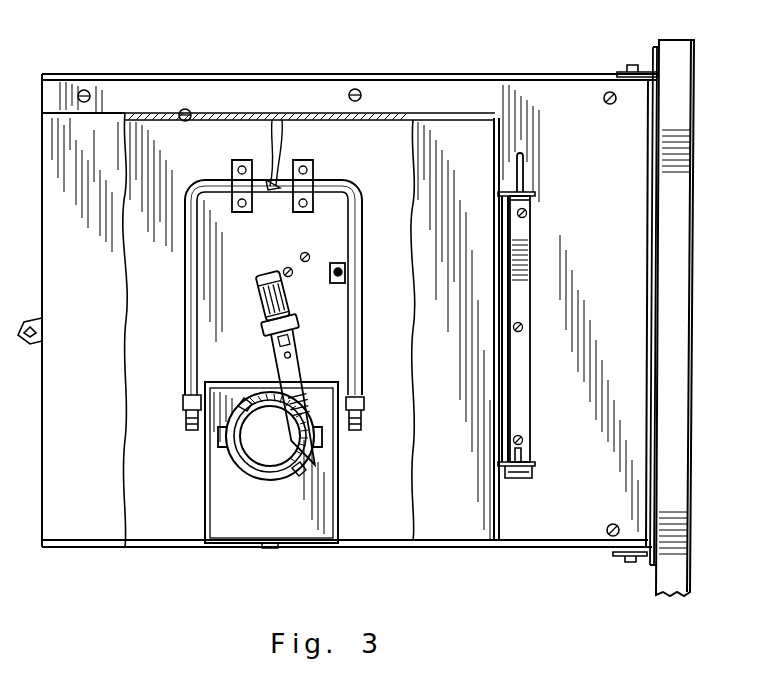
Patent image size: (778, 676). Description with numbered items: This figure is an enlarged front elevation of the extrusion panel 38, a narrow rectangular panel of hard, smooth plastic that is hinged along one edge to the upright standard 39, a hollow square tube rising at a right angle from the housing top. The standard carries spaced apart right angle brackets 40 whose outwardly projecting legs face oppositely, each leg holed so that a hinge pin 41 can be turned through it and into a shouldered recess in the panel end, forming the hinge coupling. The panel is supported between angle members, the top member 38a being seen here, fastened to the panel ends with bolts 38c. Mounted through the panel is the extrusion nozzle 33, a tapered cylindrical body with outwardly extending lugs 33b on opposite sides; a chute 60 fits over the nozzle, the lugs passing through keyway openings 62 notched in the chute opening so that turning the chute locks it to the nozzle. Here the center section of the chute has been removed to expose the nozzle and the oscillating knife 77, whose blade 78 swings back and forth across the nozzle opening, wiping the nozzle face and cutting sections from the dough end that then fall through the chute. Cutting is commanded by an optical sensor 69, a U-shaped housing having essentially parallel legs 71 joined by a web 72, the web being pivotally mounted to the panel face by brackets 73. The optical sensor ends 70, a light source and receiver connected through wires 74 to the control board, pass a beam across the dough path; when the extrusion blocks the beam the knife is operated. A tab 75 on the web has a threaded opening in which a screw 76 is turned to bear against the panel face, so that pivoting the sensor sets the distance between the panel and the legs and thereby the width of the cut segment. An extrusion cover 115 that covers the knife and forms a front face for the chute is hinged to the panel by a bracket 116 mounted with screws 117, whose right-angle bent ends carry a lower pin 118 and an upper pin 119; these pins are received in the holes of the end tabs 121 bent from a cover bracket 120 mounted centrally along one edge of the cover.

The extrusion nozzle 33 is at (256, 472).
The lugs 33b is at (218, 437).
The extrusion panel 38 is at (632, 333).
The top right angle member 38a is at (255, 74).
The bolts 38c is at (100, 74).
The upright standard 39 is at (694, 418).
The right angle brackets 40 is at (653, 48).
The hinge pin 41 is at (618, 70).
The chute 60 is at (326, 468).
The keyway openings 62 is at (236, 384).
The optical sensor 69 is at (293, 269).
The optical sensor ends 70 is at (186, 422).
The legs 71 is at (185, 320).
The web 72 is at (197, 180).
The brackets 73 is at (242, 161).
The wires 74 is at (272, 122).
The tab 75 is at (345, 283).
The screw 76 is at (368, 251).
The oscillating knife 77 is at (259, 279).
The blade 78 is at (300, 358).
The extrusion cover 115 is at (466, 335).
The bracket 116 is at (530, 275).
The screws 117 is at (527, 213).
The lower pin 118 is at (522, 452).
The upper pin 119 is at (524, 165).
The cover bracket 120 is at (534, 305).
The end tabs 121 is at (530, 190).